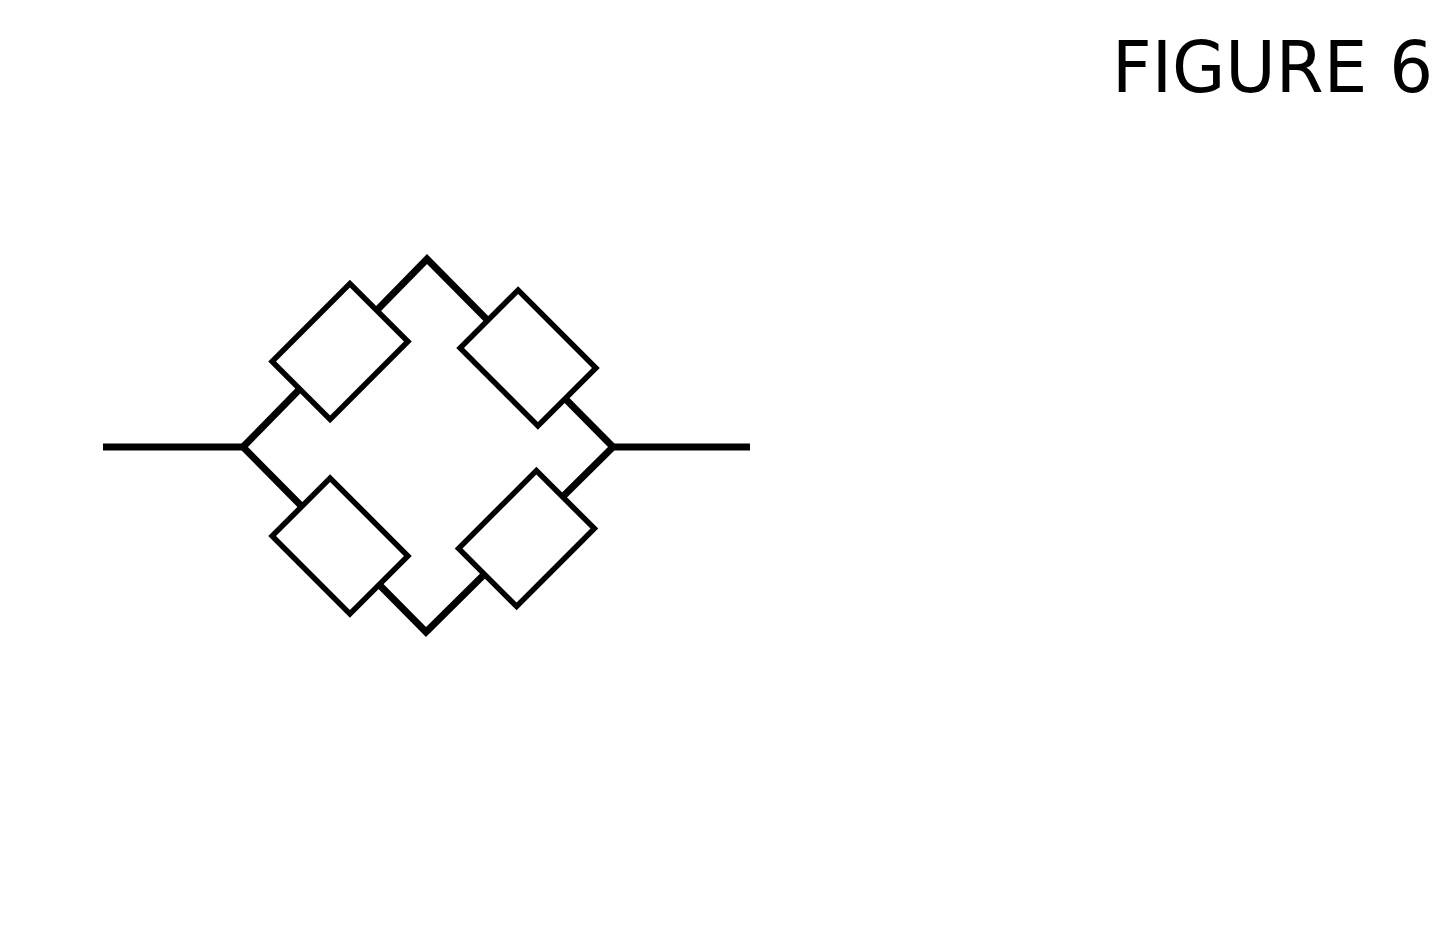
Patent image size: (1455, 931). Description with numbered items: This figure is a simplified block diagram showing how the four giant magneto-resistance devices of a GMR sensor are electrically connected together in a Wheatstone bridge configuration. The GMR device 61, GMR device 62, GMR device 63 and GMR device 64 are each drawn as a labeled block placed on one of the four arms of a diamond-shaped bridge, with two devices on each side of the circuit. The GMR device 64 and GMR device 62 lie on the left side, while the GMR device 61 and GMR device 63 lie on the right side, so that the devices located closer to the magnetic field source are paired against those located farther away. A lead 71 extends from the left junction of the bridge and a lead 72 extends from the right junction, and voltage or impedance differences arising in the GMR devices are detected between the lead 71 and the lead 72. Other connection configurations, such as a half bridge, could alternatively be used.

The GMR device 61 is at (593, 357).
The GMR device 62 is at (323, 587).
The GMR device 63 is at (565, 572).
The GMR device 64 is at (308, 325).
The lead 71 is at (137, 448).
The lead 72 is at (723, 449).